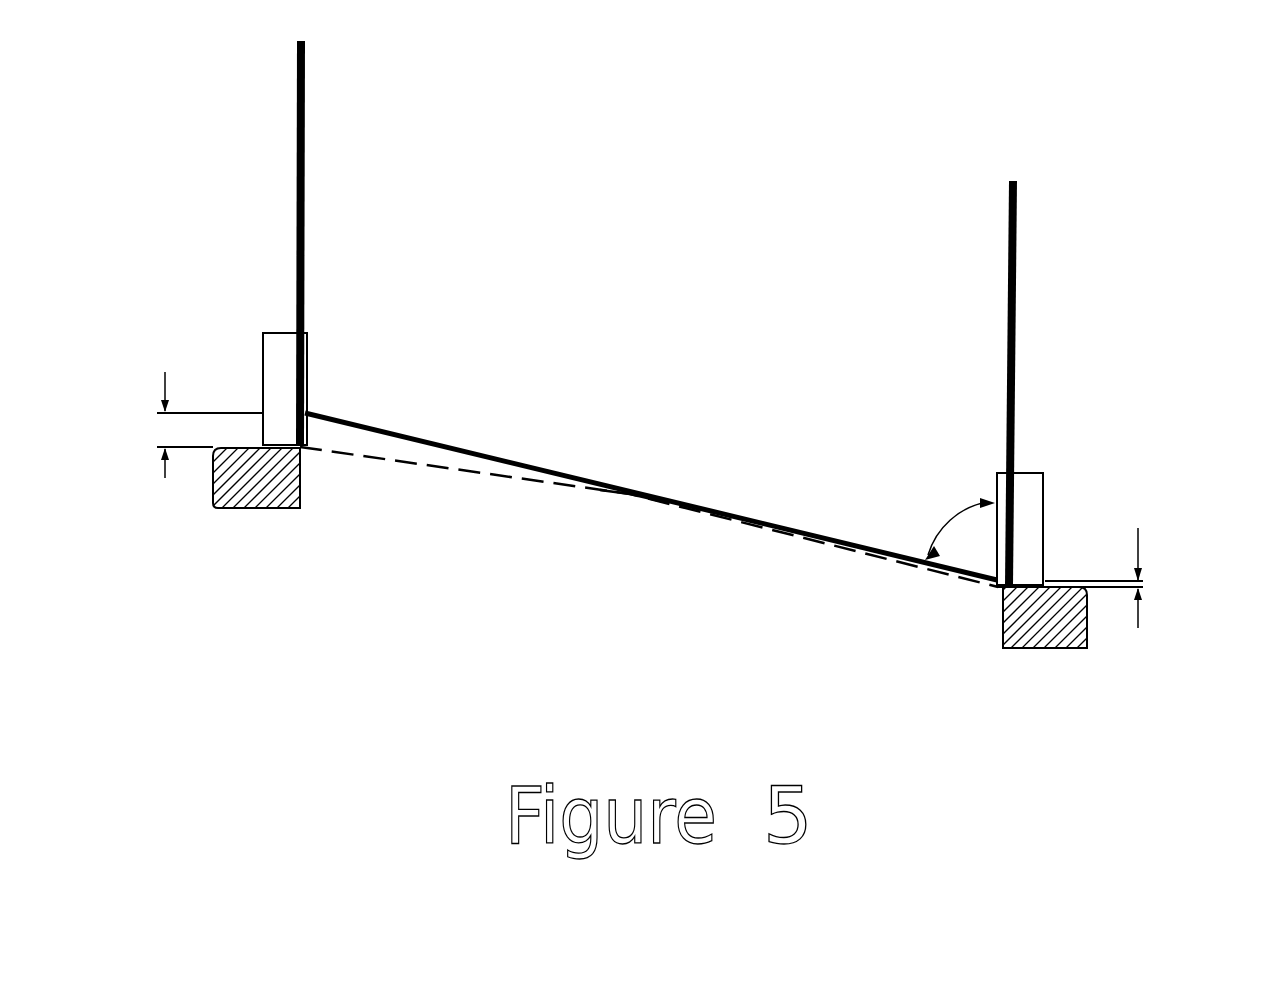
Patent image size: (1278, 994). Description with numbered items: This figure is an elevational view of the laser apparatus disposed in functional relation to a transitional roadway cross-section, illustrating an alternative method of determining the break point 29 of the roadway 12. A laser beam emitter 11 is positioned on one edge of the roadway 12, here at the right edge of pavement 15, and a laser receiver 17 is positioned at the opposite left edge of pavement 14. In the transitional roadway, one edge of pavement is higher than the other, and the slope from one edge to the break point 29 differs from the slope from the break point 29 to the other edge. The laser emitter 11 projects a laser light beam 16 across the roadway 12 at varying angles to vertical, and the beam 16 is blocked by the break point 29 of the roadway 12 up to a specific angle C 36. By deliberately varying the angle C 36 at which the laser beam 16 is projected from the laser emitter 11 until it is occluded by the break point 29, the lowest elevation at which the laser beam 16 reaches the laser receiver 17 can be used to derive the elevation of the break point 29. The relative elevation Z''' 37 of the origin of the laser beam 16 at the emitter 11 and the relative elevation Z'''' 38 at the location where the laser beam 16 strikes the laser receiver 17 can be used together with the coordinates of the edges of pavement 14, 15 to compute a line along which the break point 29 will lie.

The laser beam emitter 11 is at (1027, 473).
The roadway 12 is at (396, 470).
The left edge of pavement 14 is at (230, 518).
The right edge of pavement 15 is at (1062, 652).
The laser light beam 16 is at (410, 430).
The laser receiver 17 is at (273, 327).
The break point 29 is at (630, 507).
The angle C 36 is at (967, 505).
The relative elevation Z''' 37 is at (1138, 617).
The relative elevation Z'''' 38 is at (158, 386).